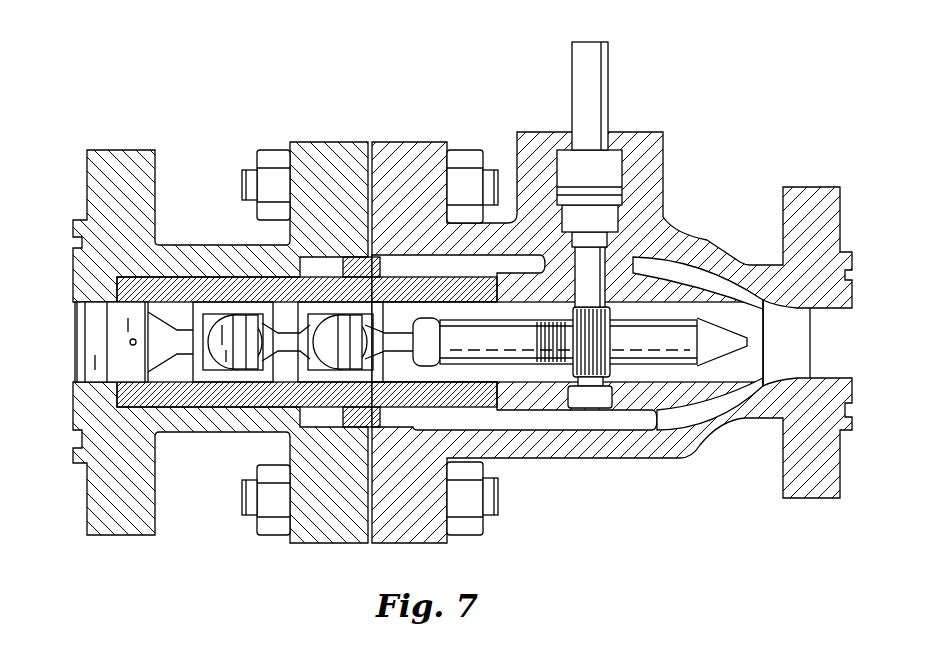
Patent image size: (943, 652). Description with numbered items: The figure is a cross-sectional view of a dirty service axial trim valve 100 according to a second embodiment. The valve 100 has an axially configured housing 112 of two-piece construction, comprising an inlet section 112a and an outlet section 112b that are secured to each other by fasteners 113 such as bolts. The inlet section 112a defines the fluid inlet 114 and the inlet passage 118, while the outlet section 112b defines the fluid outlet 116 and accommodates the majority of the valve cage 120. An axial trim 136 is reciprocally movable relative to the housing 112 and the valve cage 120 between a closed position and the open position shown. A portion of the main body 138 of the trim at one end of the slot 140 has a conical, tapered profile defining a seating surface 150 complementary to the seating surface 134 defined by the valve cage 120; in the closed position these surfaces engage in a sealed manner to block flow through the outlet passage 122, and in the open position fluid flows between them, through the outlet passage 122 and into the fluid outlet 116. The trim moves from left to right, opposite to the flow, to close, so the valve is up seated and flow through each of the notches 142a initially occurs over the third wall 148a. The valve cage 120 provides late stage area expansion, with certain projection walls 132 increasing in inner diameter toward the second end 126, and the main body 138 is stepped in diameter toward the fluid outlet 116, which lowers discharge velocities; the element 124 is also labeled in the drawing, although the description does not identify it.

The valve 100 is at (460, 310).
The housing 112 is at (690, 130).
The inlet section 112a is at (653, 190).
The outlet section 112b is at (178, 259).
The fasteners 113 is at (468, 535).
The fluid inlet 114 is at (858, 344).
The fluid outlet 116 is at (70, 346).
The inlet passage 118 is at (628, 422).
The valve cage 120 is at (227, 422).
The outlet passage 122 is at (217, 380).
The lower passage 124 is at (503, 392).
The second end 126 is at (117, 295).
The projection walls 132 is at (170, 377).
The seating surface 134 is at (390, 310).
The axial trim 136 is at (323, 300).
The main body 138 is at (477, 347).
The slot 140 is at (350, 430).
The notches 142a is at (253, 378).
The third wall 148a is at (231, 325).
The seating surface 150 is at (373, 310).